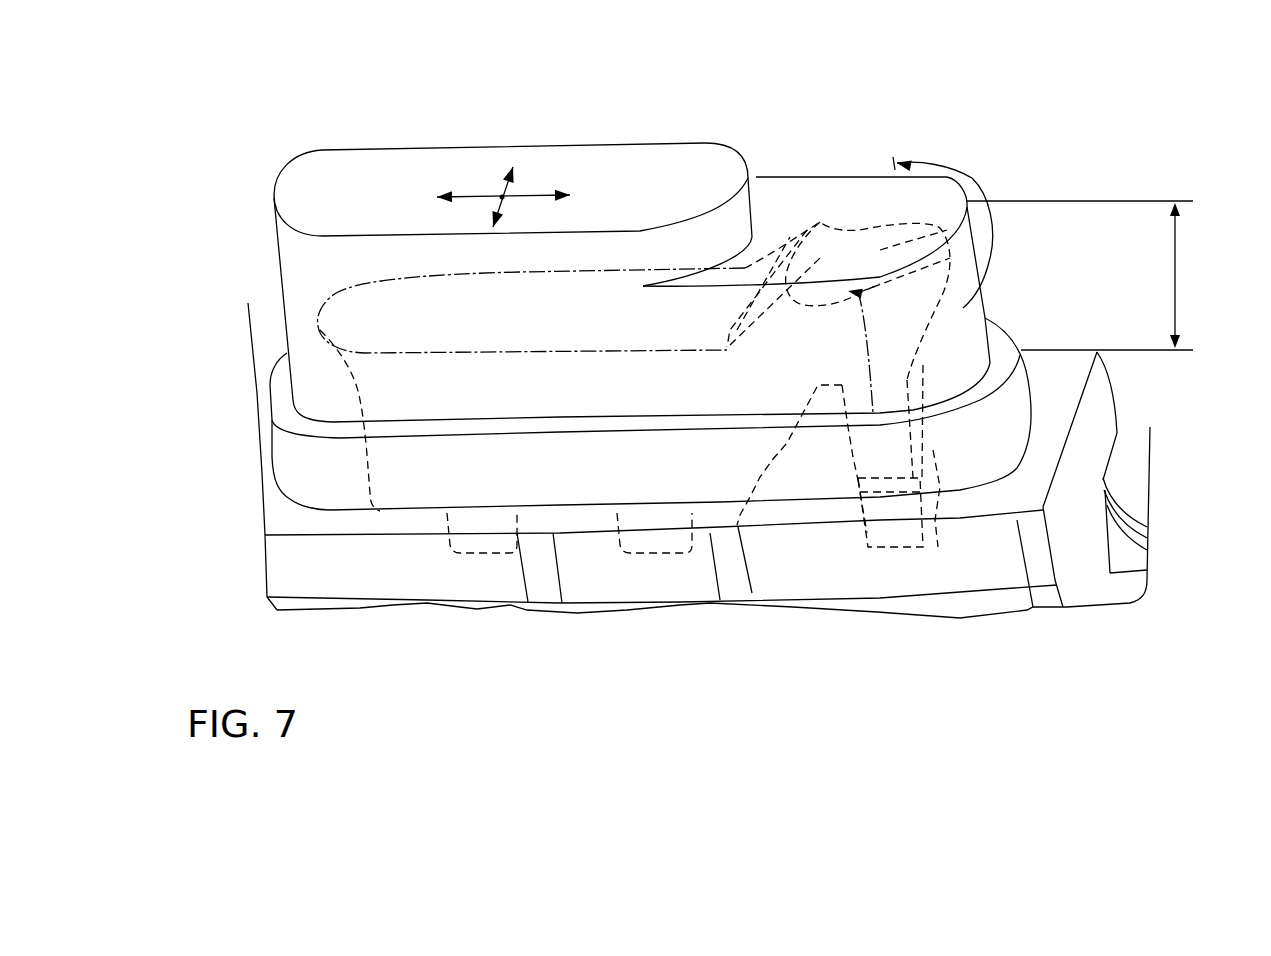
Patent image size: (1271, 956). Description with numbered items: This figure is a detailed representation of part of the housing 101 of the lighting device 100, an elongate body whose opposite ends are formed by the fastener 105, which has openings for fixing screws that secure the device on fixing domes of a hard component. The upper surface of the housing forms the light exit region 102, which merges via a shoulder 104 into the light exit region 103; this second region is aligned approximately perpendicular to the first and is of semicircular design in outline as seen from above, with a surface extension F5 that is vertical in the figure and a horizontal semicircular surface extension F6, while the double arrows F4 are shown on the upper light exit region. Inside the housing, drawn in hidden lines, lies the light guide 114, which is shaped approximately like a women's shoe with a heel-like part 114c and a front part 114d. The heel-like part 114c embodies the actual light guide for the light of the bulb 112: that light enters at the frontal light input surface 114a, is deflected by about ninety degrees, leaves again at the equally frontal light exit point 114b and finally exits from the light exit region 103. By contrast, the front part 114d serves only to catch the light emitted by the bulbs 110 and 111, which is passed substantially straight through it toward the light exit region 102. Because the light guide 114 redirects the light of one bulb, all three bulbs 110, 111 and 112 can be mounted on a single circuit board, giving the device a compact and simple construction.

The device 100 is at (878, 133).
The housing 101 is at (1133, 411).
The light exit region 102 is at (664, 163).
The light exit region 103 is at (968, 307).
The shoulder 104 is at (750, 212).
The fastener 105 is at (1133, 520).
The bulb 110 is at (443, 543).
The bulb 111 is at (618, 543).
The bulb 112 is at (882, 582).
The light guide 114 is at (818, 306).
The light input surface 114a is at (897, 492).
The light exit point 114b is at (950, 258).
The heel-like part 114c is at (822, 534).
The front part 114d is at (779, 534).
The translational motion directions F4 is at (500, 192).
The surface extension F5 is at (1175, 278).
The semicircular surface extension F6 is at (972, 178).